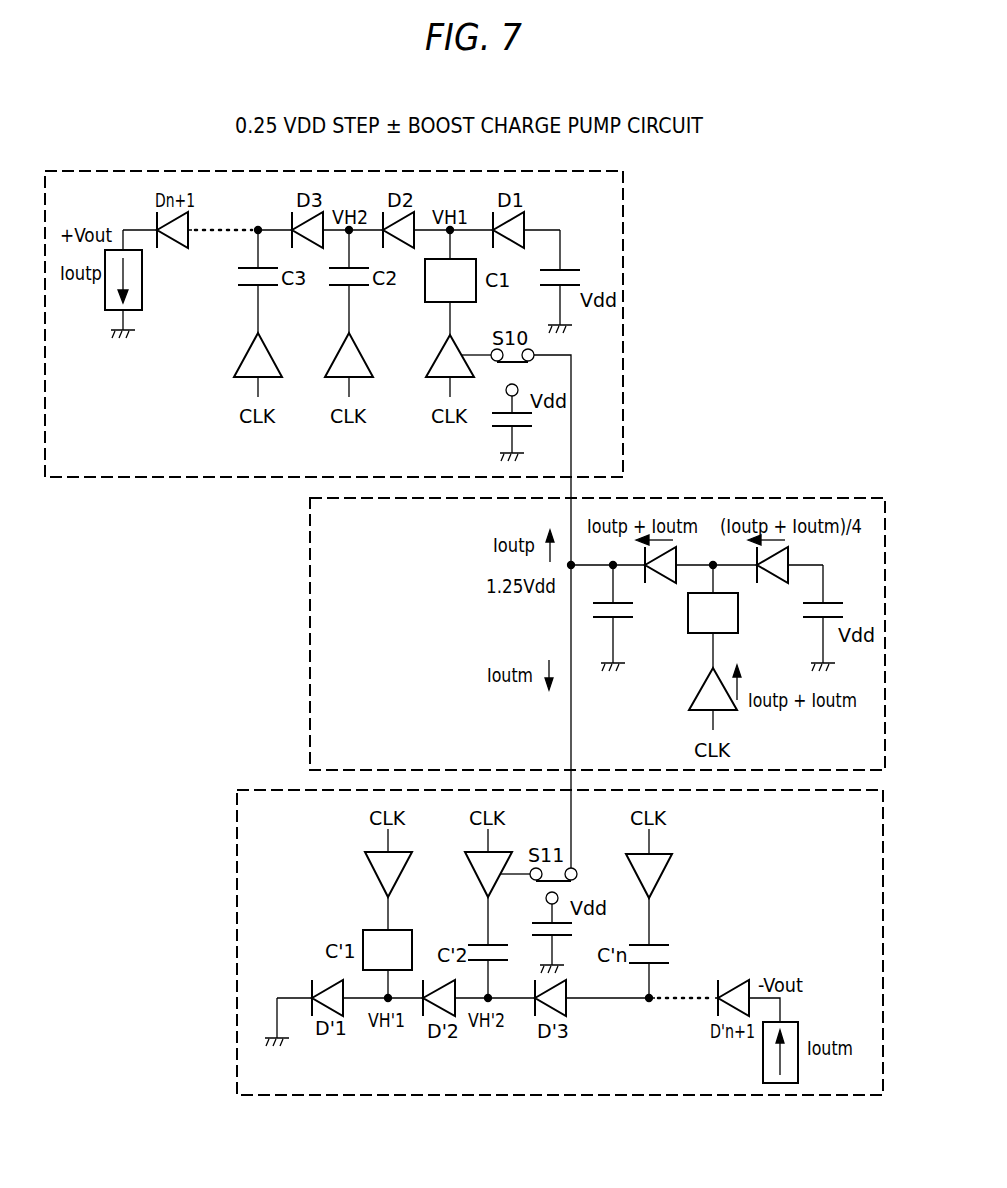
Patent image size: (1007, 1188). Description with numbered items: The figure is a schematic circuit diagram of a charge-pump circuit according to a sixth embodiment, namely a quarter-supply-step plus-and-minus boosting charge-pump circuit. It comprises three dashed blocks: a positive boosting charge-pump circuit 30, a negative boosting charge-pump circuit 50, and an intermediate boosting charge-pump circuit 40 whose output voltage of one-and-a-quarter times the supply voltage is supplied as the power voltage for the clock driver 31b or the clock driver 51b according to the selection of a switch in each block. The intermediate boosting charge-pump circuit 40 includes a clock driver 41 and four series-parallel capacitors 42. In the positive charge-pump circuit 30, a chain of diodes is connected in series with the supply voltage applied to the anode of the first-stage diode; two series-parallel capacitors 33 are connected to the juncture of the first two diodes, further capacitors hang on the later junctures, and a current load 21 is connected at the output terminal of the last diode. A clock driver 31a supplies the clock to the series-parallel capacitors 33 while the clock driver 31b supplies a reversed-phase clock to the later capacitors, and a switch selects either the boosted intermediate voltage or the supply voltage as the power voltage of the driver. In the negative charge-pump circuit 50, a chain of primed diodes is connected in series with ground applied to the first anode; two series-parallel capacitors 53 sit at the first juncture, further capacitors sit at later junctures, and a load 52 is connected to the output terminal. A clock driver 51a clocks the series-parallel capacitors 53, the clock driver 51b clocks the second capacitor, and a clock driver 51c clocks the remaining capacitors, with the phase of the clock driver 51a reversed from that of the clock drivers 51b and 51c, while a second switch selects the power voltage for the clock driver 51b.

The output current source Ioutp 21 is at (143, 276).
The +0.5 Vdd step boosting charge-pump circuit 30 is at (624, 331).
The clock driver 31a is at (436, 352).
The clock driver 31b is at (250, 352).
The series-parallel capacitors 33 is at (477, 291).
The +1.25 Vdd step boosting charge-pump circuit 40 is at (308, 633).
The clock driver 41 is at (700, 690).
The series-parallel capacitors 42 is at (688, 612).
The -0.5 Vdd step boosting charge-pump circuit 50 is at (236, 940).
The clock driver 51a is at (376, 878).
The clock driver 51b is at (478, 878).
The clock driver 51c is at (660, 878).
The load 52 is at (763, 1054).
The series-parallel capacitors 53 is at (363, 940).